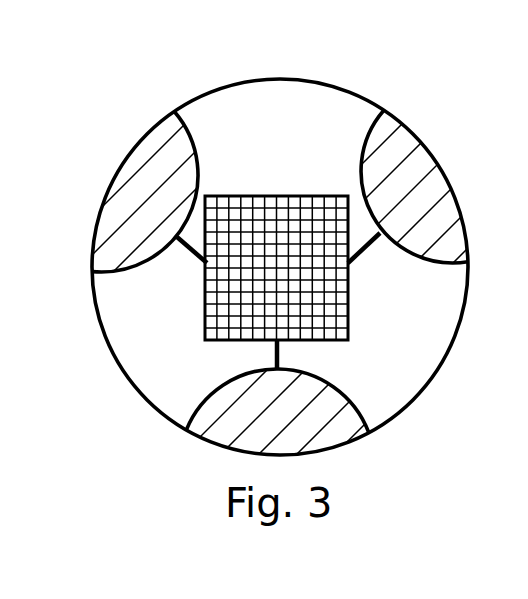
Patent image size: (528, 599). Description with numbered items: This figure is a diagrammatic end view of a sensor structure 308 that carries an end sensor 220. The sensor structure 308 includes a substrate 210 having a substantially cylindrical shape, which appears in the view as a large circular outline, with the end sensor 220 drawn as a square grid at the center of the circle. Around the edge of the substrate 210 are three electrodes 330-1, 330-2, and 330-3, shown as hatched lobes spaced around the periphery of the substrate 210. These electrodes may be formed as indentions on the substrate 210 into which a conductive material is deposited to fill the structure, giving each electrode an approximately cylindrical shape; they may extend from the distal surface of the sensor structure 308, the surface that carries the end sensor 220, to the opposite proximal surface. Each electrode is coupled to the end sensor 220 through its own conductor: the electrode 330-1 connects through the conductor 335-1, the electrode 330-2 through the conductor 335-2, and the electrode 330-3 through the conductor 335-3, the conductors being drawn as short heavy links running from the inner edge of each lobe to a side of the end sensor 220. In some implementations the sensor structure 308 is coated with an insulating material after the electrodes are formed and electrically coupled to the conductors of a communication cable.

The sensor structure 308 is at (147, 78).
The substrate 210 is at (280, 88).
The end sensor 220 is at (272, 197).
The electrode 330-1 is at (440, 185).
The electrode 330-2 is at (330, 405).
The electrode 330-3 is at (120, 180).
The conductor 335-1 is at (370, 253).
The conductor 335-2 is at (270, 353).
The conductor 335-3 is at (190, 257).